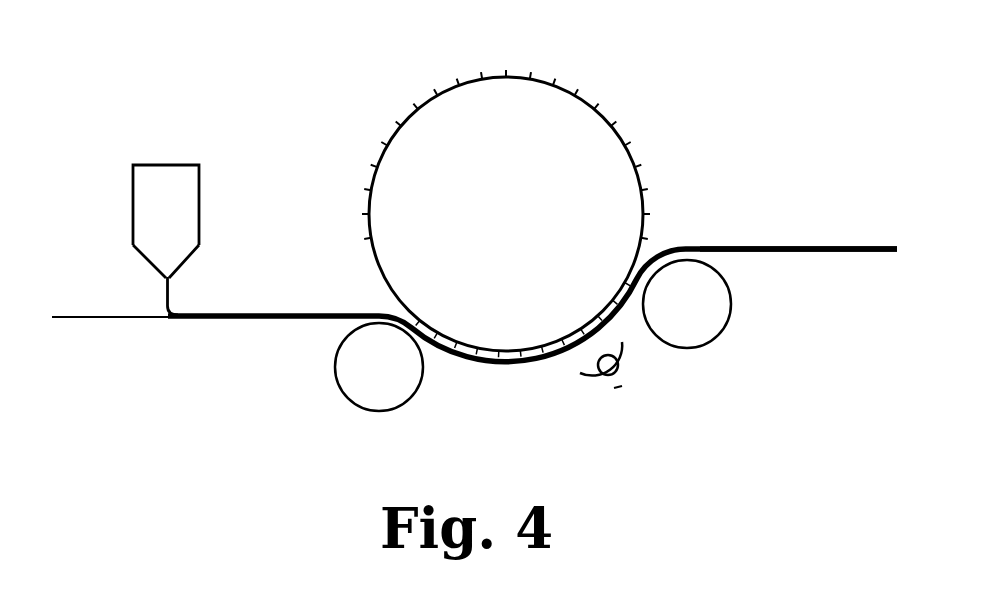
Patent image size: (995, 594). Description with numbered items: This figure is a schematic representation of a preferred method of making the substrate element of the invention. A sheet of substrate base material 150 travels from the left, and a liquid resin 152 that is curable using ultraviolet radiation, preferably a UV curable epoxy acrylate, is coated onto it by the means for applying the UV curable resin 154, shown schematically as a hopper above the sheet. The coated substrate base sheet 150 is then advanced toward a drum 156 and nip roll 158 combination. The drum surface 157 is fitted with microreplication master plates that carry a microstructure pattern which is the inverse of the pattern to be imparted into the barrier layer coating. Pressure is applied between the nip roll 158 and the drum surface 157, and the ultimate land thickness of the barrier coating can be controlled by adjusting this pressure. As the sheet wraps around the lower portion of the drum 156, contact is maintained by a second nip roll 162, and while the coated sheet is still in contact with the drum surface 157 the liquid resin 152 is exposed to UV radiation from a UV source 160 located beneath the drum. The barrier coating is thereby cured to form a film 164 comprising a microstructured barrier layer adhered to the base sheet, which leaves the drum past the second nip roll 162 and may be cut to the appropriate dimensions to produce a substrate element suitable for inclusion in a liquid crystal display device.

The substrate base material 150 is at (95, 319).
The liquid resin 152 is at (170, 300).
The means for applying the UV curable resin 154 is at (162, 185).
The drum 156 is at (573, 95).
The drum surface 157 is at (420, 100).
The nip roll 158 is at (362, 380).
The UV source 160 is at (620, 386).
The second nip roll 162 is at (710, 304).
The film 164 is at (793, 244).